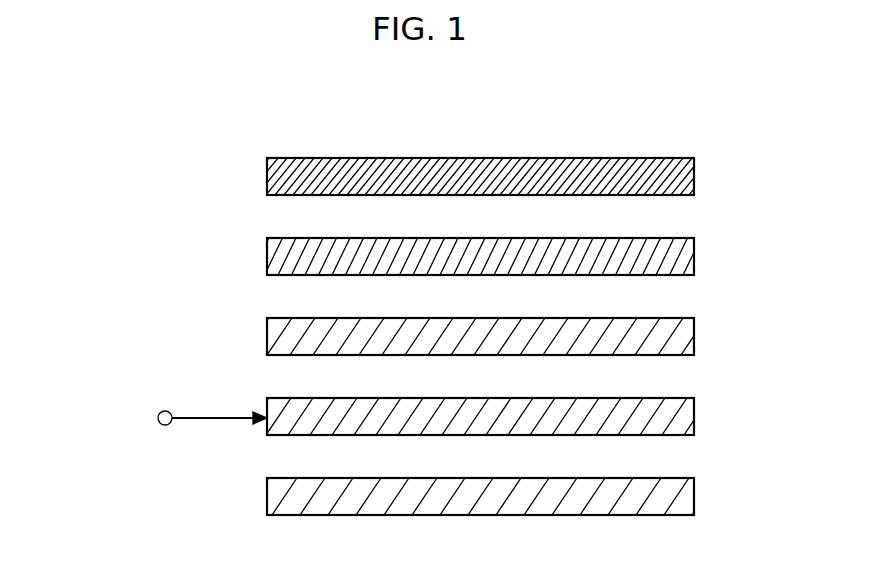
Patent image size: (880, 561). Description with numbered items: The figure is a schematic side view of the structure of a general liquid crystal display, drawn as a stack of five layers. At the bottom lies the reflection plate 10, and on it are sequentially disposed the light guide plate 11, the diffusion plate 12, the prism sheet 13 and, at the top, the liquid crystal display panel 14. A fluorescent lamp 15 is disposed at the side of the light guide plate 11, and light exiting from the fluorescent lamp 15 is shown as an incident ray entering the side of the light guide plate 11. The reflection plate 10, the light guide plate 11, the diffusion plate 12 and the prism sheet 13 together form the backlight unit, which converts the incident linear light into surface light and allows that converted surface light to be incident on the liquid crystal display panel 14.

The reflection plate 10 is at (695, 492).
The light guide plate 11 is at (695, 412).
The diffusion plate 12 is at (695, 332).
The prism sheet 13 is at (695, 252).
The liquid crystal display panel 14 is at (695, 172).
The fluorescent lamp 15 is at (163, 425).